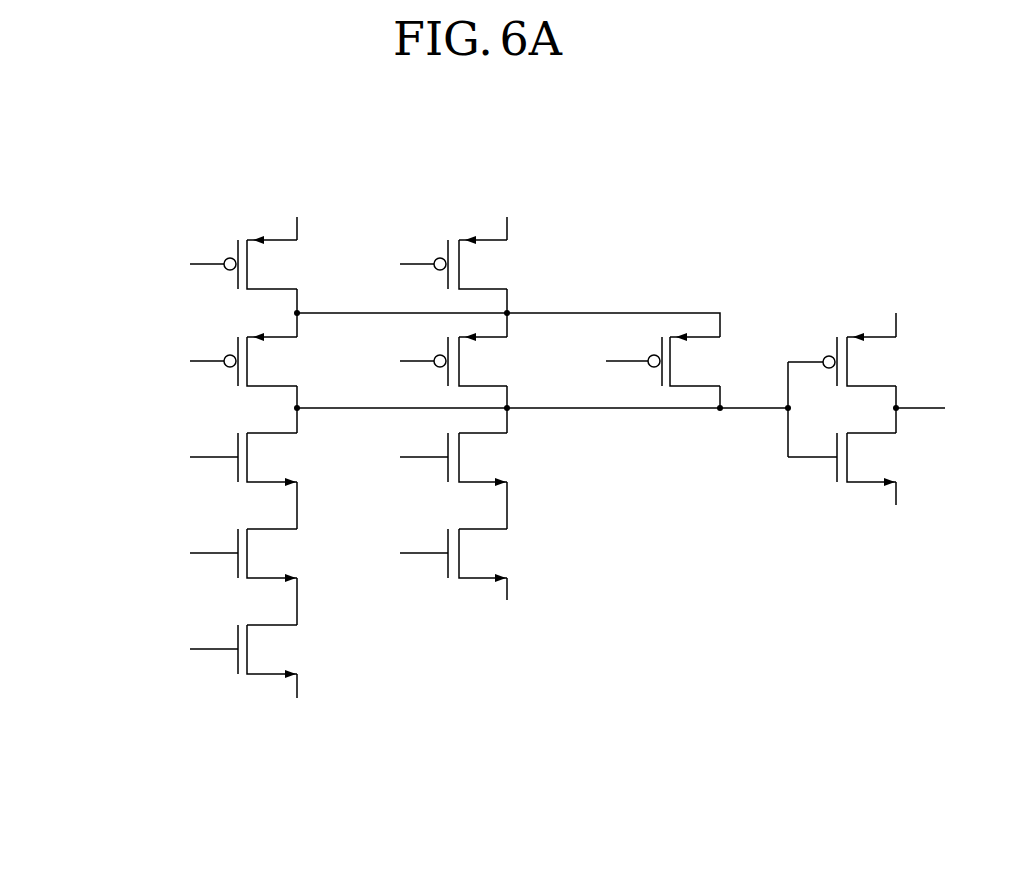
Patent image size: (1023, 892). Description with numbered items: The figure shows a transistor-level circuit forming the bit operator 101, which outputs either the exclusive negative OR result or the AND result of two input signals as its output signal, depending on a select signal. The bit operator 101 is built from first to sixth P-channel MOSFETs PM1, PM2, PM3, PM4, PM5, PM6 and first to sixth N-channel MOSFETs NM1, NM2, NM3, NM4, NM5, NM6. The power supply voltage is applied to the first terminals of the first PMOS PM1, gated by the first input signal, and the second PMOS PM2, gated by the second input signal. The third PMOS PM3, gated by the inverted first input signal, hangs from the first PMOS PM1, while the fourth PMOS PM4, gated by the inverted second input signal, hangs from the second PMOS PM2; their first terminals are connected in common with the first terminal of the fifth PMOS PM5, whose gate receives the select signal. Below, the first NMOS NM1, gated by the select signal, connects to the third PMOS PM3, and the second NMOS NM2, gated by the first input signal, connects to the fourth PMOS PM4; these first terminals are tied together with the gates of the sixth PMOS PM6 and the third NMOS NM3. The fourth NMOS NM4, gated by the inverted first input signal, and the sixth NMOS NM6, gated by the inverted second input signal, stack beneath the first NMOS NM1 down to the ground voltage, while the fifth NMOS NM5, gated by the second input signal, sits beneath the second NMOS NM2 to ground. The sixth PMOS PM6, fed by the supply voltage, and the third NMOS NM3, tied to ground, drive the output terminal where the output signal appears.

The bit operator 101 is at (875, 156).
The first PMOS PM1 is at (280, 262).
The second PMOS PM2 is at (490, 262).
The third PMOS PM3 is at (280, 359).
The fourth PMOS PM4 is at (490, 359).
The fifth PMOS PM5 is at (703, 359).
The sixth PMOS PM6 is at (879, 359).
The first NMOS NM1 is at (281, 459).
The second NMOS NM2 is at (491, 459).
The third NMOS NM3 is at (881, 459).
The fourth NMOS NM4 is at (281, 555).
The fifth NMOS NM5 is at (491, 555).
The sixth NMOS NM6 is at (281, 651).